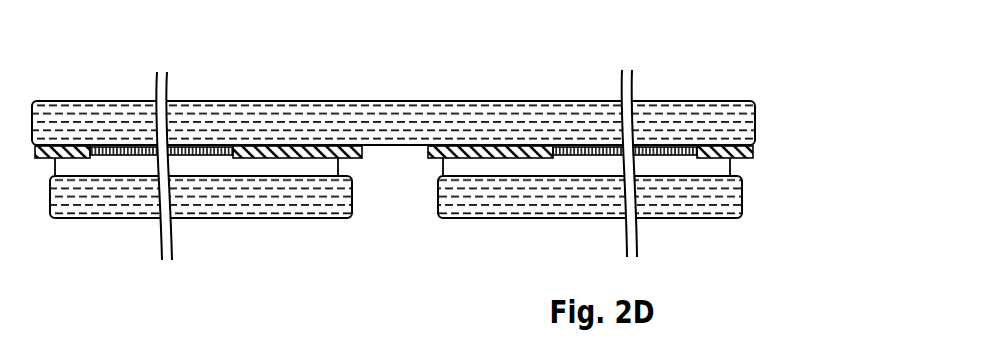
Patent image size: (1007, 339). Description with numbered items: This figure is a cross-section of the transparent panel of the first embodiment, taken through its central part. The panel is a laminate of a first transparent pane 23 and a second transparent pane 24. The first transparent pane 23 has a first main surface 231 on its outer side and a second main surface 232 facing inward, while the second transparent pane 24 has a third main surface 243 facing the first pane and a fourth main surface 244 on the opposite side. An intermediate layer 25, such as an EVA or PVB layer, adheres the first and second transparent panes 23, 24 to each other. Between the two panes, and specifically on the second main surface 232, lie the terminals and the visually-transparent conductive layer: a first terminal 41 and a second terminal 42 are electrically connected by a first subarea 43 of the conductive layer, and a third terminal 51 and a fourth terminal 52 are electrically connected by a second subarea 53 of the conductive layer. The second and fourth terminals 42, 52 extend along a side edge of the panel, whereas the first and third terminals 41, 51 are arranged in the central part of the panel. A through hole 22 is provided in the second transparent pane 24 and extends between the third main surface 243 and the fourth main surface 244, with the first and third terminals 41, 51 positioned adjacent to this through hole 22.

The through hole 22 is at (409, 232).
The first transparent pane 23 is at (483, 123).
The first main surface 231 is at (258, 101).
The second main surface 232 is at (388, 147).
The second transparent pane 24 is at (72, 207).
The third main surface 243 is at (203, 168).
The fourth main surface 244 is at (297, 205).
The intermediate layer 25 is at (120, 168).
The first terminal 41 is at (300, 145).
The second terminal 42 is at (73, 155).
The first subarea of visually-transparent conductive layer 43 is at (212, 147).
The third terminal 51 is at (445, 145).
The fourth terminal 52 is at (720, 143).
The second subarea of visually-transparent conductive layer 53 is at (660, 145).